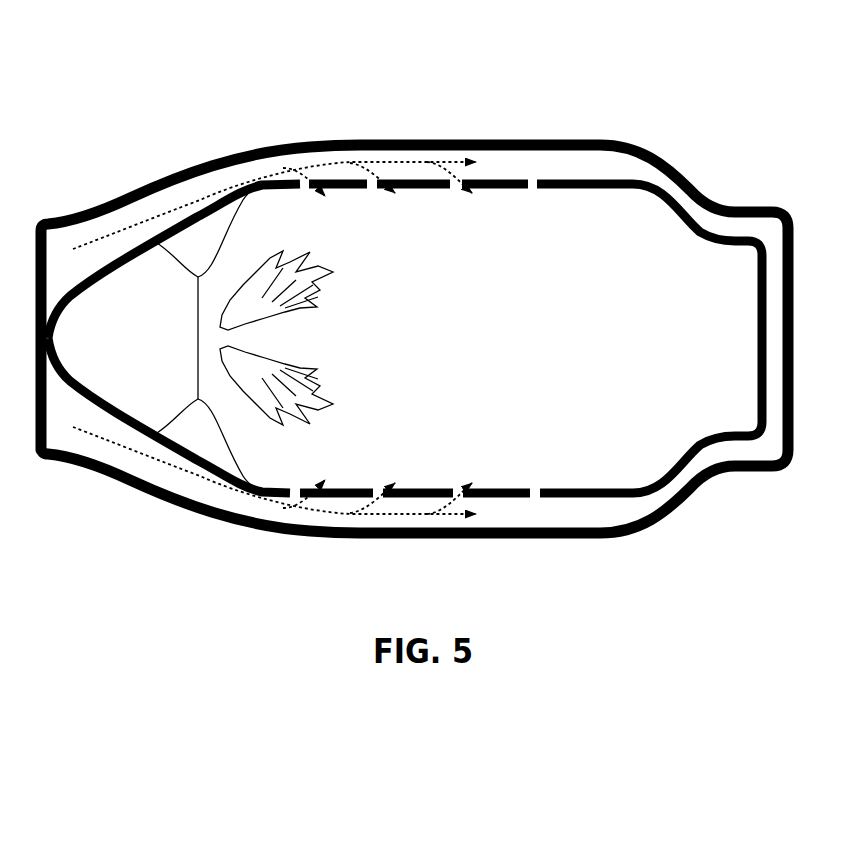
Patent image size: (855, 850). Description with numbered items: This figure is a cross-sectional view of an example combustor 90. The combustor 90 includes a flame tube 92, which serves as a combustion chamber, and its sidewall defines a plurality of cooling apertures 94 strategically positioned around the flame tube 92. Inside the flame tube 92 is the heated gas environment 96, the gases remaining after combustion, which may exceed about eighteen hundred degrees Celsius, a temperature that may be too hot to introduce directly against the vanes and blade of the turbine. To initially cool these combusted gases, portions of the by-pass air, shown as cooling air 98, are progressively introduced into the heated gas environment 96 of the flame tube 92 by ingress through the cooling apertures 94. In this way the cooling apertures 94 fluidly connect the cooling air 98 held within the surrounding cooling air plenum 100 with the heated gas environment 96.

The combustor 90 is at (146, 68).
The flame tube 92 is at (273, 190).
The cooling apertures 94 is at (370, 190).
The heated gas environment 96 is at (482, 356).
The cooling air 98 is at (260, 338).
The cooling air plenum 100 is at (595, 176).